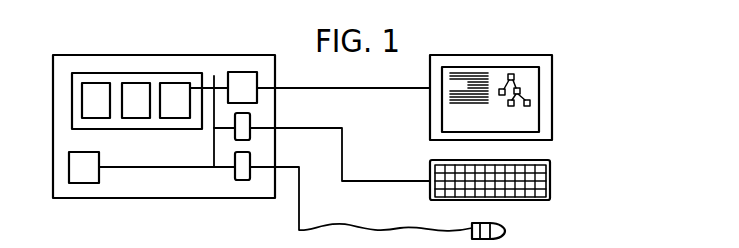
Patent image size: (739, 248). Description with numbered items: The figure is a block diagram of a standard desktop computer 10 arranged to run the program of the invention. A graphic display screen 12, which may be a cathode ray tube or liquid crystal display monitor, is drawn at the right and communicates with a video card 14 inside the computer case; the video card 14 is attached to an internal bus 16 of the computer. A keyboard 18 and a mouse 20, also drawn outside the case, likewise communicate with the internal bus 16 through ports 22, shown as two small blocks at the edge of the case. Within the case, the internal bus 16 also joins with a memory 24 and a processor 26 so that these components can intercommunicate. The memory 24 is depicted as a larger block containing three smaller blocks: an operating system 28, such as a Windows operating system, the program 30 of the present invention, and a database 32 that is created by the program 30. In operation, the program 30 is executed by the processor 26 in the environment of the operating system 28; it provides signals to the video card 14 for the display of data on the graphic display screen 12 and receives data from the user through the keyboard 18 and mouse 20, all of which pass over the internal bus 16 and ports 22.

The computer 10 is at (518, 25).
The graphic display screen 12 is at (527, 74).
The video card 14 is at (241, 72).
The internal bus 16 is at (213, 85).
The keyboard 18 is at (550, 178).
The mouse 20 is at (505, 229).
The ports 22 is at (254, 135).
The memory 24 is at (105, 73).
The processor 26 is at (80, 167).
The operating system 28 is at (93, 101).
The program 30 is at (137, 93).
The database 32 is at (177, 93).